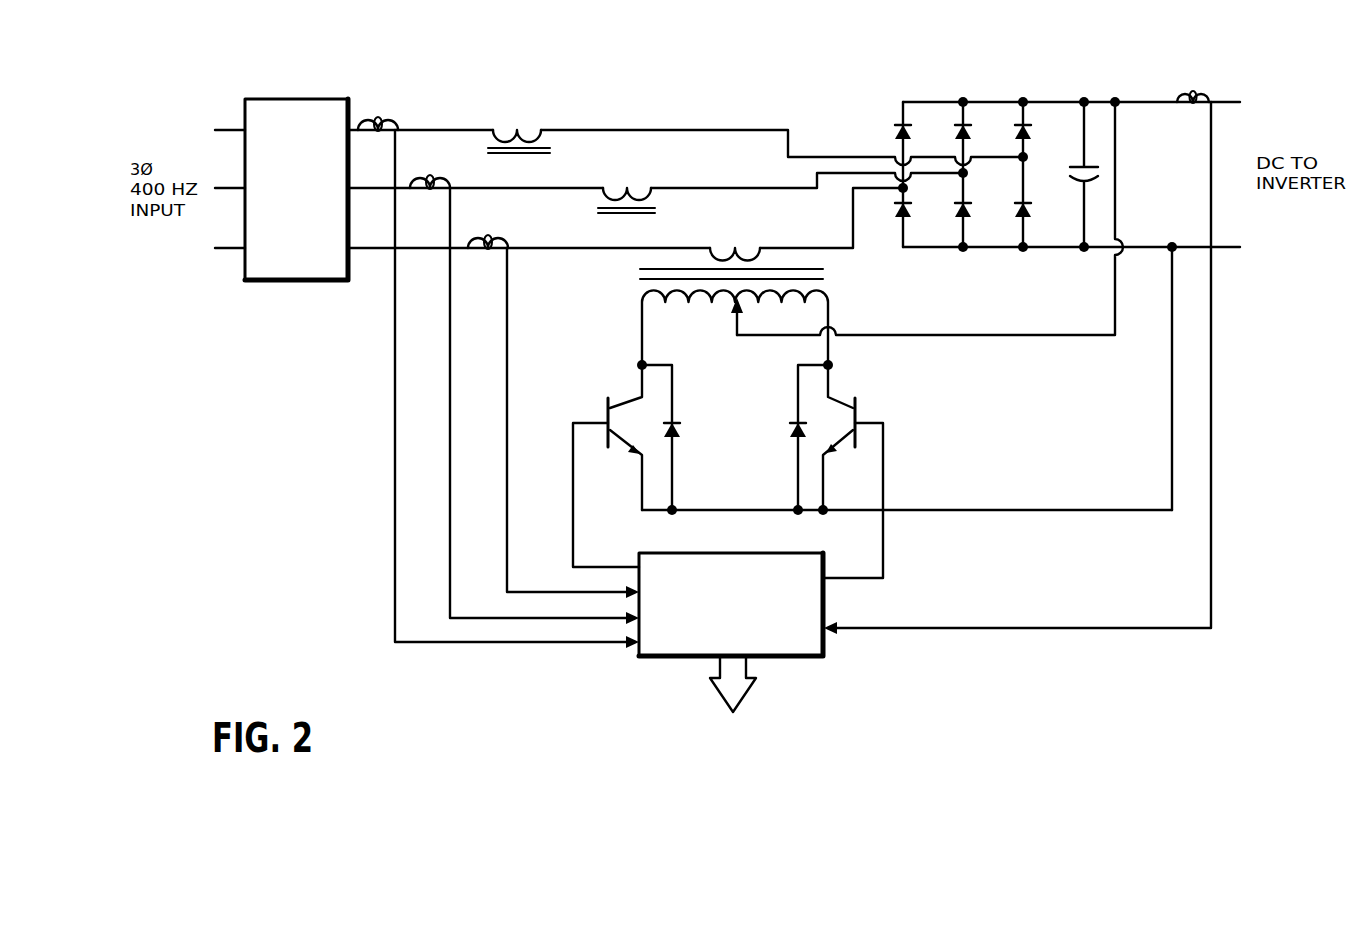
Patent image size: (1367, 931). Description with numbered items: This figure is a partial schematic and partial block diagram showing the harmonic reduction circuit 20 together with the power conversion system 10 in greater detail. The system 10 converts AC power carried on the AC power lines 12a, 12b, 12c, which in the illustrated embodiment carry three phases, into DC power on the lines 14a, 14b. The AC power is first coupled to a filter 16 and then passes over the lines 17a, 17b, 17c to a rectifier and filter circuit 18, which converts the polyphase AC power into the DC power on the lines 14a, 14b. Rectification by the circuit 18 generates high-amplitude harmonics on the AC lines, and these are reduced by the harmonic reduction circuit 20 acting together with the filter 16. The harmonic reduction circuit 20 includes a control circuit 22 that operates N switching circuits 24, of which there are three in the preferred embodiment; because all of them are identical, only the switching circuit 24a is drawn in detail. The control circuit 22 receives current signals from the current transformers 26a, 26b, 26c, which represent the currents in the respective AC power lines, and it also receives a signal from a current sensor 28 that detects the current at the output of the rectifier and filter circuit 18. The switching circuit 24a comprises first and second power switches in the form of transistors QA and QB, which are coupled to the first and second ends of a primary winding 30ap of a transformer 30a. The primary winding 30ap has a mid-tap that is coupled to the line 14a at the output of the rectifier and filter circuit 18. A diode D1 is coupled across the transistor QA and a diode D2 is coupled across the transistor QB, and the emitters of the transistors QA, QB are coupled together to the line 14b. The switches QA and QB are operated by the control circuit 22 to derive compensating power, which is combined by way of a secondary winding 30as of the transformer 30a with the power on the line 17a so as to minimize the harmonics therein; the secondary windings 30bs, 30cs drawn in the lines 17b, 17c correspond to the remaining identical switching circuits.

The power conversion system 10 is at (941, 89).
The AC power line 12a is at (227, 250).
The AC power line 12b is at (230, 186).
The AC power line 12c is at (232, 128).
The DC power line 14a is at (1143, 100).
The DC power line 14b is at (1143, 246).
The filter 16 is at (322, 108).
The line 17a is at (532, 250).
The line 17b is at (527, 190).
The line 17c is at (460, 128).
The rectifier and filter circuit 18 is at (976, 96).
The harmonic reduction circuit 20 is at (588, 391).
The control circuit 22 is at (808, 648).
The switching circuits 24 is at (740, 719).
The switching circuit 24a is at (758, 408).
The current sensor (phase a) 26a is at (503, 238).
The current sensor (phase b) 26b is at (448, 181).
The current sensor (phase c) 26c is at (388, 118).
The current sensor 28 is at (1200, 100).
The transformer 30a is at (632, 289).
The primary winding 30ap is at (712, 300).
The secondary winding 30as is at (748, 258).
The transformer secondary winding (phase b) 30bs is at (648, 197).
The transformer secondary winding (phase c) 30cs is at (535, 130).
The transistor QA is at (634, 398).
The transistor QB is at (843, 400).
The diode D1 is at (681, 432).
The diode D2 is at (792, 438).